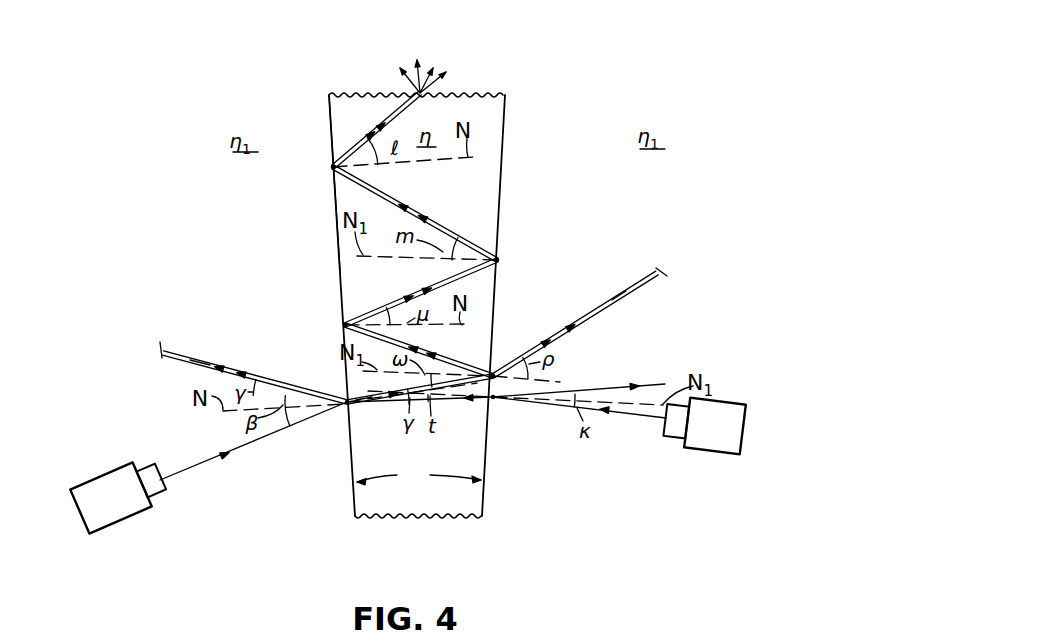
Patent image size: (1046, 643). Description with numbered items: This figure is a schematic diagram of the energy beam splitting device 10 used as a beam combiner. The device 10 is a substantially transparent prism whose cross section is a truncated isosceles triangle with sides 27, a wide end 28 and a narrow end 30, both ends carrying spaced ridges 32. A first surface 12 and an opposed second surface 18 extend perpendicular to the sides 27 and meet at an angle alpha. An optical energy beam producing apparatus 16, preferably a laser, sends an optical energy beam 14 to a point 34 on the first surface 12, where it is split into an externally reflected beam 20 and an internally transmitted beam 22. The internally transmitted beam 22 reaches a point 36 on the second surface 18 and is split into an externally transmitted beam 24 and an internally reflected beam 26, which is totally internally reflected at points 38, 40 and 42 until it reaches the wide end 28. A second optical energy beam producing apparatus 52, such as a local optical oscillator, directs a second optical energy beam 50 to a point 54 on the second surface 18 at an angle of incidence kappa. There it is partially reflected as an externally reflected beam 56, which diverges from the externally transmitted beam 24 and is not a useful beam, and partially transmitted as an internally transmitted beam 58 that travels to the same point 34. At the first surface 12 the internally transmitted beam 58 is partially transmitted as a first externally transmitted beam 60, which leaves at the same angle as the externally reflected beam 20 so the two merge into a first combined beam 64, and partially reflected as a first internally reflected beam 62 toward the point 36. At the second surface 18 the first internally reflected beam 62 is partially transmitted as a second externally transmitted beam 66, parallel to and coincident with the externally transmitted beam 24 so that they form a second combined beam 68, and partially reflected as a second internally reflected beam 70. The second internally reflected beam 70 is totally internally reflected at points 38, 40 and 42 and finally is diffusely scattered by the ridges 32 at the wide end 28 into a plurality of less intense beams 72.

The energy beam splitting device 10 is at (429, 301).
The first surface 12 is at (338, 292).
The optical energy beam 14 is at (207, 463).
The optical energy beam producing apparatus 16 is at (110, 472).
The second surface 18 is at (503, 183).
The externally reflected beam 20 is at (188, 368).
The internally transmitted beam 22 is at (358, 404).
The externally transmitted beam 24 is at (630, 293).
The internally reflected beam 26 is at (385, 124).
The truncated isosceles triangle sides 27 is at (355, 196).
The wide end 28 is at (460, 92).
The narrow end 30 is at (433, 517).
The ridges 32 is at (373, 92).
The point 34 is at (343, 407).
The point 36 is at (495, 378).
The point 38 is at (345, 325).
The point 40 is at (497, 260).
The point 42 is at (333, 167).
The second optical energy beam 50 is at (633, 414).
The second optical energy beam producing apparatus 52 is at (710, 456).
The point 54 is at (494, 400).
The externally reflected beam 56 is at (659, 386).
The internally transmitted beam 58 is at (472, 399).
The first externally transmitted beam 60 is at (193, 356).
The first internally reflected beam 62 is at (360, 382).
The first combined beam 64 is at (160, 343).
The second externally transmitted beam 66 is at (619, 294).
The second combined beam 68 is at (663, 272).
The second internally reflected beam 70 is at (355, 147).
The less intense beams 72 is at (421, 92).